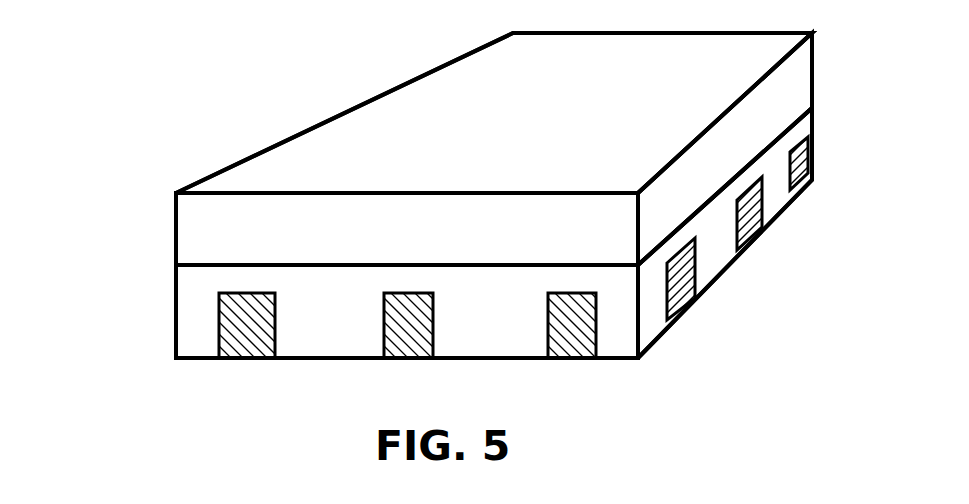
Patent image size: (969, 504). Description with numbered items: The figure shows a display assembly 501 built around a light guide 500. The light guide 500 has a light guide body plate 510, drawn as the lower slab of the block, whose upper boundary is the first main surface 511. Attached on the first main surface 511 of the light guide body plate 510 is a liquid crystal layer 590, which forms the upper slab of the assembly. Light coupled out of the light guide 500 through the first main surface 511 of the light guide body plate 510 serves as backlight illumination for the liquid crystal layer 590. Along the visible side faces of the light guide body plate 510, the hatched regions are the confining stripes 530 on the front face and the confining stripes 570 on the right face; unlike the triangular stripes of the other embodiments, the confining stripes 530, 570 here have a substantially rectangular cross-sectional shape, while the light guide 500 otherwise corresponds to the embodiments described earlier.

The light guide 500 is at (160, 360).
The display assembly 501 is at (258, 73).
The liquid crystal layer 590 is at (207, 235).
The first main surface 511 is at (192, 265).
The light guide body plate 510 is at (185, 305).
The confining stripes 530 is at (558, 347).
The confining stripes 570 is at (685, 288).